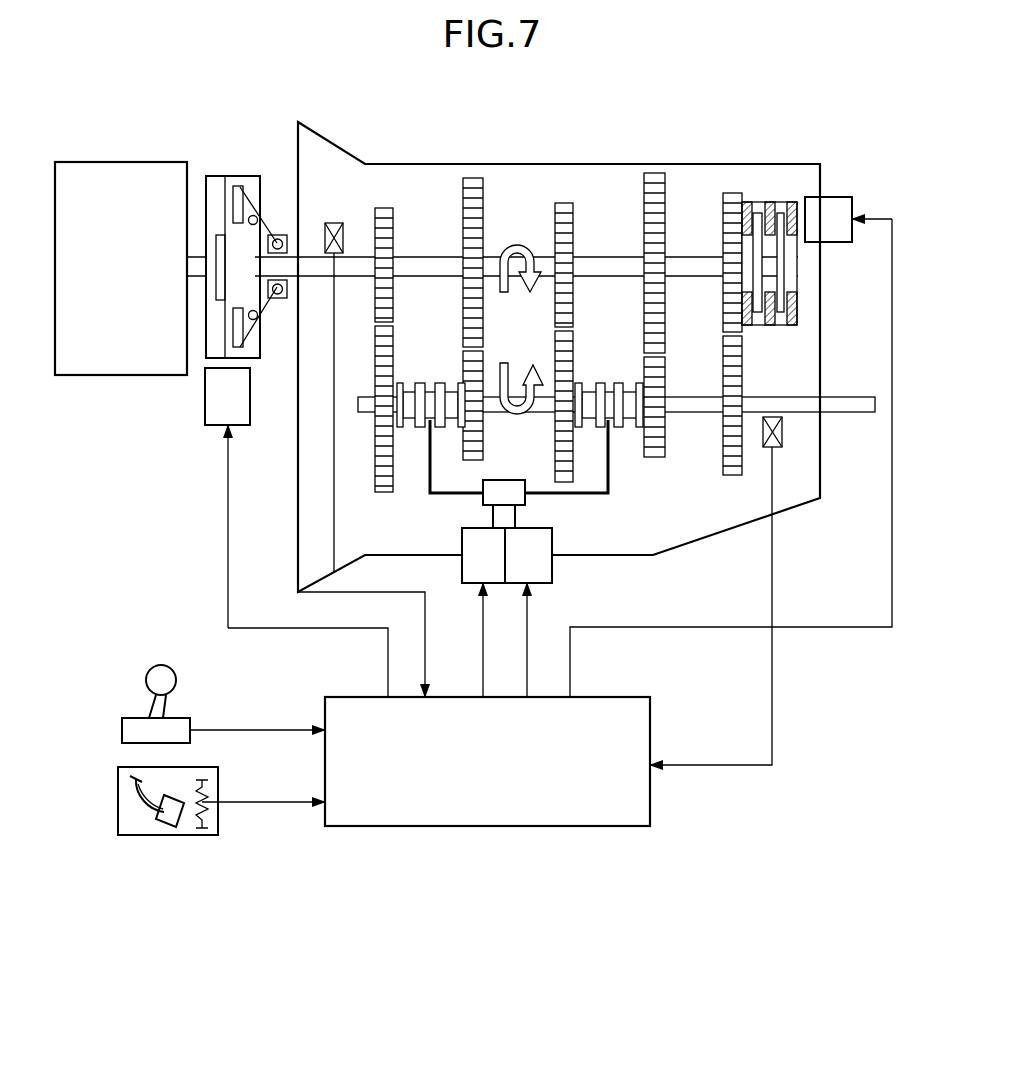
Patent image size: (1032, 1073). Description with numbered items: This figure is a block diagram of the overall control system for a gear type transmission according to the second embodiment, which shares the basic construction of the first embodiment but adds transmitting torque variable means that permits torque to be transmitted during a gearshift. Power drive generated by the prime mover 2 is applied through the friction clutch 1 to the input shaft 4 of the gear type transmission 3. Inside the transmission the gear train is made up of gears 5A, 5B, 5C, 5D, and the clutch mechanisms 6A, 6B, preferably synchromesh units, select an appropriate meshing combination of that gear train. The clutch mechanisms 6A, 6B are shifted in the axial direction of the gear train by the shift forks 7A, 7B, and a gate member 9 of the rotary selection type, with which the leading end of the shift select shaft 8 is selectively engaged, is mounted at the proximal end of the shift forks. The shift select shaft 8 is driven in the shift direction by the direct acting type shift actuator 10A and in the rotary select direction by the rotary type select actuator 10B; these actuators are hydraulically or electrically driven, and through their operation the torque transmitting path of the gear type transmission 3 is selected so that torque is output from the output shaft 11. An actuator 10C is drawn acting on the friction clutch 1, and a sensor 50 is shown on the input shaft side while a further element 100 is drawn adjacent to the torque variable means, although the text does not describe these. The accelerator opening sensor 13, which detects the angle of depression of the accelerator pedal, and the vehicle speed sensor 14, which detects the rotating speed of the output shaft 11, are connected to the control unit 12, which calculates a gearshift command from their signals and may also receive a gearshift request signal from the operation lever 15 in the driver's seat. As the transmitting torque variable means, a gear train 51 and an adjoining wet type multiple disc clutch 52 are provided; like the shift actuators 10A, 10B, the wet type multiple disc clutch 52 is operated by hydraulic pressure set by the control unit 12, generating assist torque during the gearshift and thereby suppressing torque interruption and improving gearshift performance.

The friction clutch 1 is at (237, 185).
The prime mover 2 is at (108, 168).
The gear type transmission 3 is at (296, 150).
The input shaft 4 is at (290, 300).
The gear 5A is at (383, 208).
The gear 5B is at (472, 178).
The gear 5C is at (563, 205).
The gear 5D is at (654, 175).
The clutch mechanism 6A is at (398, 367).
The clutch mechanism 6B is at (578, 367).
The shift fork 7A is at (428, 480).
The shift fork 7B is at (612, 470).
The shift select shaft 8 is at (515, 515).
The gate member 9 is at (505, 484).
The shift actuator 10A is at (470, 583).
The select actuator 10B is at (552, 572).
The clutch actuator 10C is at (213, 397).
The output shaft 11 is at (845, 397).
The control unit 12 is at (405, 828).
The accelerator opening sensor 13 is at (170, 835).
The vehicle speed sensor 14 is at (783, 432).
The operation lever 15 is at (130, 718).
The input shaft rotation sensor 50 is at (334, 222).
The gear train 51 is at (730, 195).
The wet type multiple disc clutch 52 is at (780, 202).
The actuator 100 is at (838, 198).